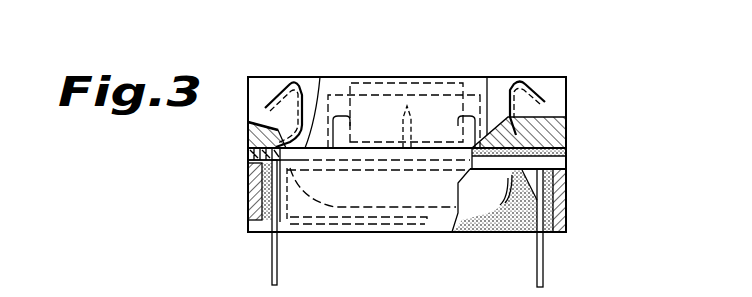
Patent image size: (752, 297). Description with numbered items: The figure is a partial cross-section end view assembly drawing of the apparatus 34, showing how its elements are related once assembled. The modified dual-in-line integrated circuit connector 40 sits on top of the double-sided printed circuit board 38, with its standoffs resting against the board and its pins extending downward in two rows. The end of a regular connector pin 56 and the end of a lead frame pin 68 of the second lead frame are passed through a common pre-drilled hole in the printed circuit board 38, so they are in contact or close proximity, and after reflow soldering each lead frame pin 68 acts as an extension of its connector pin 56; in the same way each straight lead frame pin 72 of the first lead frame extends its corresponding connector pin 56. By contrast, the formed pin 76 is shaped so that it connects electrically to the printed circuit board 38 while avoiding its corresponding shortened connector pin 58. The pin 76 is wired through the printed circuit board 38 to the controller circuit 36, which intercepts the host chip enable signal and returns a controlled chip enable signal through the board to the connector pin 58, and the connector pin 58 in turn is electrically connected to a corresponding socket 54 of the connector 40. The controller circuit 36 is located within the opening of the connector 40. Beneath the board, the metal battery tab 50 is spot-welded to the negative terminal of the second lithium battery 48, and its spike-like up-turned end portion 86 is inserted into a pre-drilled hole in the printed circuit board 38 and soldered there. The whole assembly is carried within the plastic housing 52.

The apparatus 34 is at (393, 51).
The controller circuit 36 is at (462, 84).
The double-sided printed circuit board 38 is at (567, 158).
The modified dual-in-line integrated circuit connector 40 is at (248, 126).
The second lithium battery 48 is at (489, 196).
The metal battery tab 50 is at (315, 228).
The plastic housing 52 is at (248, 172).
The socket 54 is at (289, 80).
The connector pin 56 is at (565, 190).
The connector pin 58 is at (567, 182).
The lead frame pin 68 is at (270, 258).
The lead frame pin 72 is at (563, 208).
The pin 76 is at (544, 270).
The spike-like up-turned end portion 86 is at (321, 77).